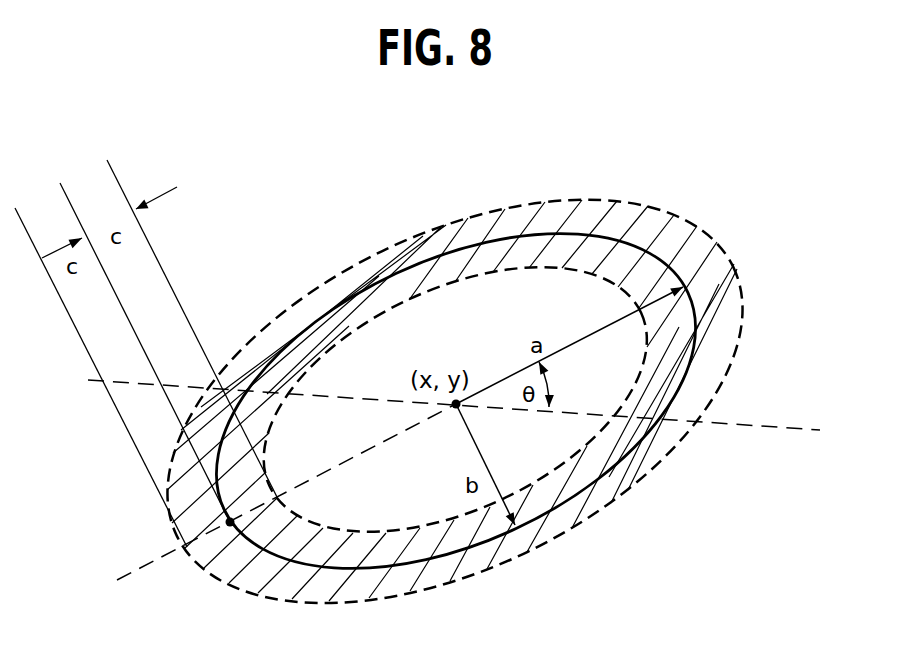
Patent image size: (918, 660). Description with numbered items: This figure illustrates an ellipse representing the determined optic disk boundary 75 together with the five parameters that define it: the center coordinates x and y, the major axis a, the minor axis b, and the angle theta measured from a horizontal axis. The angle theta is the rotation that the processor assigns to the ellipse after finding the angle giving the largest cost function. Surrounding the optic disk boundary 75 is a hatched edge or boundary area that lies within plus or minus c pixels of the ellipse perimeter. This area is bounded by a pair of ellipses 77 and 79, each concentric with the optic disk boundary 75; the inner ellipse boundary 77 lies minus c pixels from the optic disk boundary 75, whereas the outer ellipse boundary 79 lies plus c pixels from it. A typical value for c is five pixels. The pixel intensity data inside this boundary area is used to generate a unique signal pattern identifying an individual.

The optic disk boundary 75 is at (662, 250).
The inner ellipse boundary 77 is at (540, 268).
The outer ellipse boundary 79 is at (628, 200).